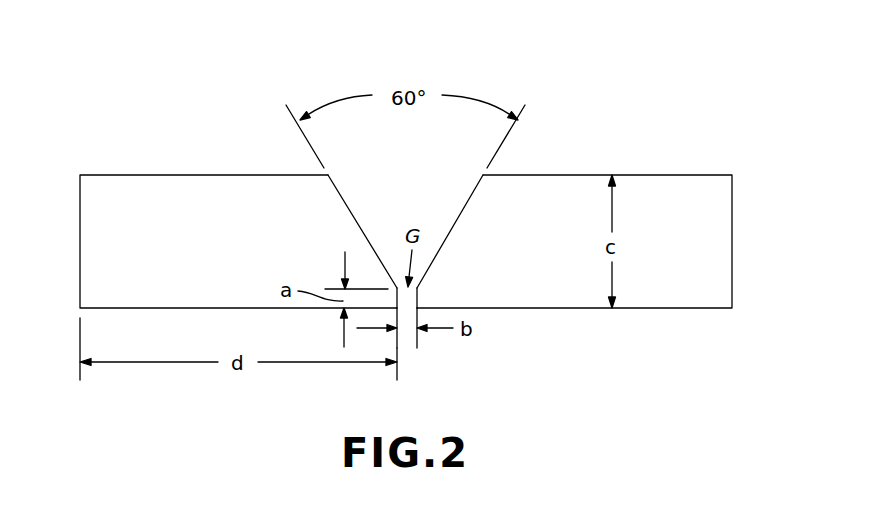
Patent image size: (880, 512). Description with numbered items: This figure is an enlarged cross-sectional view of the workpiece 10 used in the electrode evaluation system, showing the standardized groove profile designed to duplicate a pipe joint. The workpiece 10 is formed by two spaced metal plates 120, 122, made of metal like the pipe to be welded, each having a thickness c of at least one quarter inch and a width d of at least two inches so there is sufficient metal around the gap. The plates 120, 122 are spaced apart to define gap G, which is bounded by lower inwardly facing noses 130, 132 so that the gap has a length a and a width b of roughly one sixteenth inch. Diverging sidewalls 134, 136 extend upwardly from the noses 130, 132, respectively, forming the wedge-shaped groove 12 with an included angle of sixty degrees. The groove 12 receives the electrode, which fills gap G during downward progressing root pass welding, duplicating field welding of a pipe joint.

The workpiece 10 is at (645, 139).
The groove 12 is at (422, 197).
The metal plate 120 is at (176, 175).
The metal plate 122 is at (528, 175).
The nose 130 is at (396, 298).
The nose 132 is at (420, 298).
The sidewall 134 is at (338, 190).
The sidewall 136 is at (478, 184).